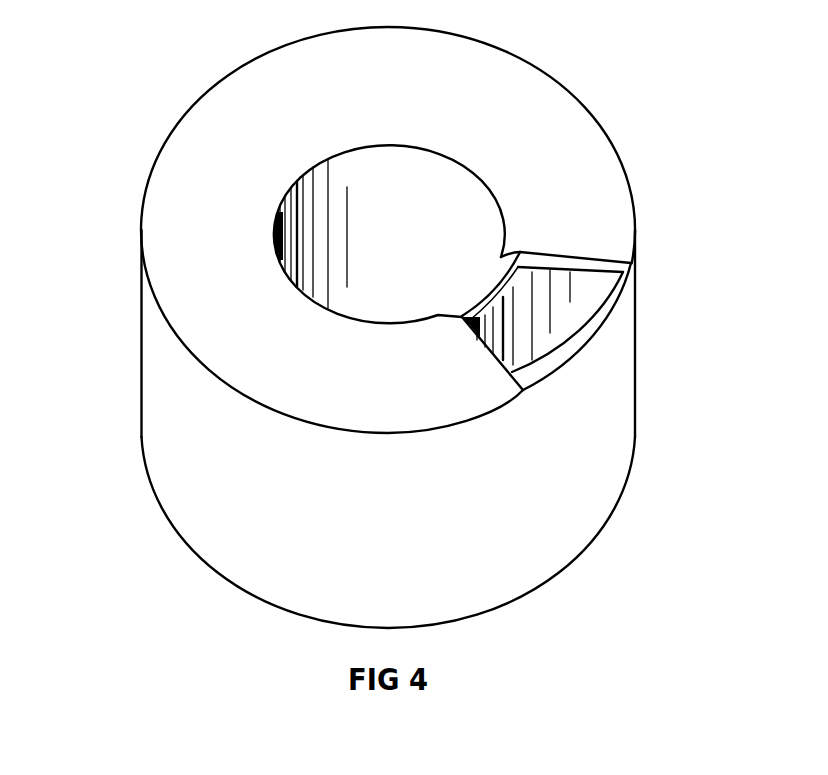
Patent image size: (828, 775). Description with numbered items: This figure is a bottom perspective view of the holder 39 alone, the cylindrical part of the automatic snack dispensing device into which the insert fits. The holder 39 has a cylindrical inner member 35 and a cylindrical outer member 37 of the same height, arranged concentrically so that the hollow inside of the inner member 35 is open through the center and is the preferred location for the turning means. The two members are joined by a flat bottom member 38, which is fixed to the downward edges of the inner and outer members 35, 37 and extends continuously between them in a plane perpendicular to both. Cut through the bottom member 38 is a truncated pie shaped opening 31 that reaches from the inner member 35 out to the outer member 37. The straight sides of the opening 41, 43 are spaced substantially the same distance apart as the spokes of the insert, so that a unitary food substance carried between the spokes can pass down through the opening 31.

The truncated pie shaped opening 31 is at (580, 328).
The cylindrical inner member 35 is at (447, 205).
The cylindrical outer member 37 is at (607, 415).
The flat bottom member 38 is at (200, 152).
The holder 39 is at (135, 207).
The straight side of the opening 41 is at (593, 263).
The straight side of the opening 43 is at (517, 373).